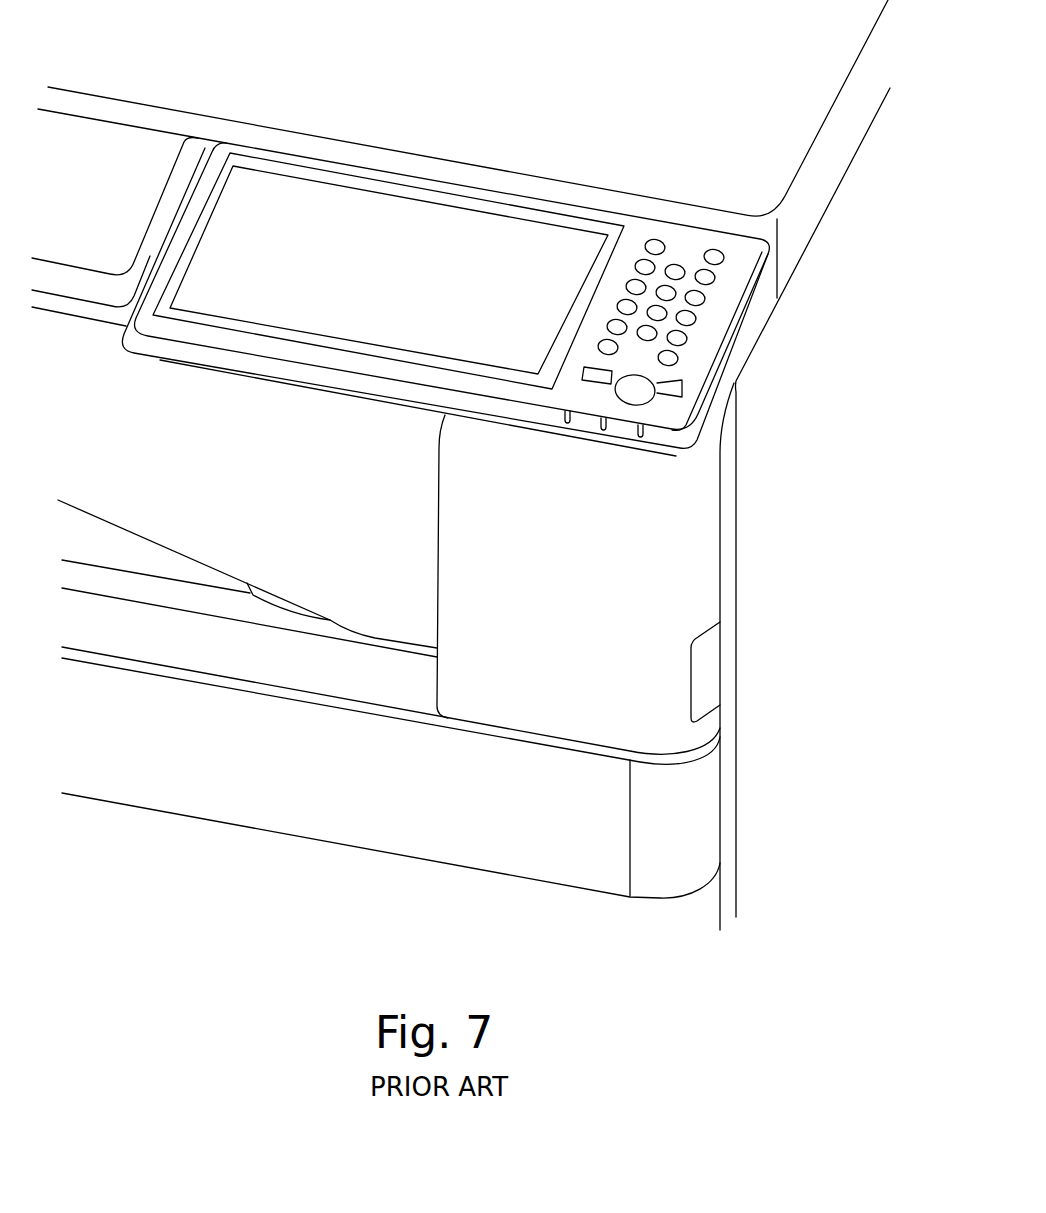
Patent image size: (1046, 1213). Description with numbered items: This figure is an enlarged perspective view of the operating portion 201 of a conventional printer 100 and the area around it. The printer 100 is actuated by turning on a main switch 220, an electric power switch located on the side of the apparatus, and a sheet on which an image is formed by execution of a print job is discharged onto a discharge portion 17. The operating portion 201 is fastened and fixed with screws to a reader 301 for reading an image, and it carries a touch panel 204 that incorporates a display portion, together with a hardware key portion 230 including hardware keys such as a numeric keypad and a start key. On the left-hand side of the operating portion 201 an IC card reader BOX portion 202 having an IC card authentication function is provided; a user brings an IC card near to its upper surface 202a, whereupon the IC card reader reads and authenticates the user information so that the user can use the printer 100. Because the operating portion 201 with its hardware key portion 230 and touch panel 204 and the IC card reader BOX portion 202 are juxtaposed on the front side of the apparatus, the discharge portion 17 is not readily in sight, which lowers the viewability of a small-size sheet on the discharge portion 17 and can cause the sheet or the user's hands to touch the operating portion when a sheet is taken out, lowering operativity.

The printer 100 is at (337, 863).
The discharge portion 17 is at (250, 533).
The operating portion 201 is at (500, 149).
The IC card reader BOX portion 202 is at (69, 113).
The upper surface 202a is at (127, 167).
The touch panel 204 is at (332, 233).
The main switch 220 is at (710, 675).
The hardware key portion 230 is at (685, 255).
The reader 301 is at (238, 118).